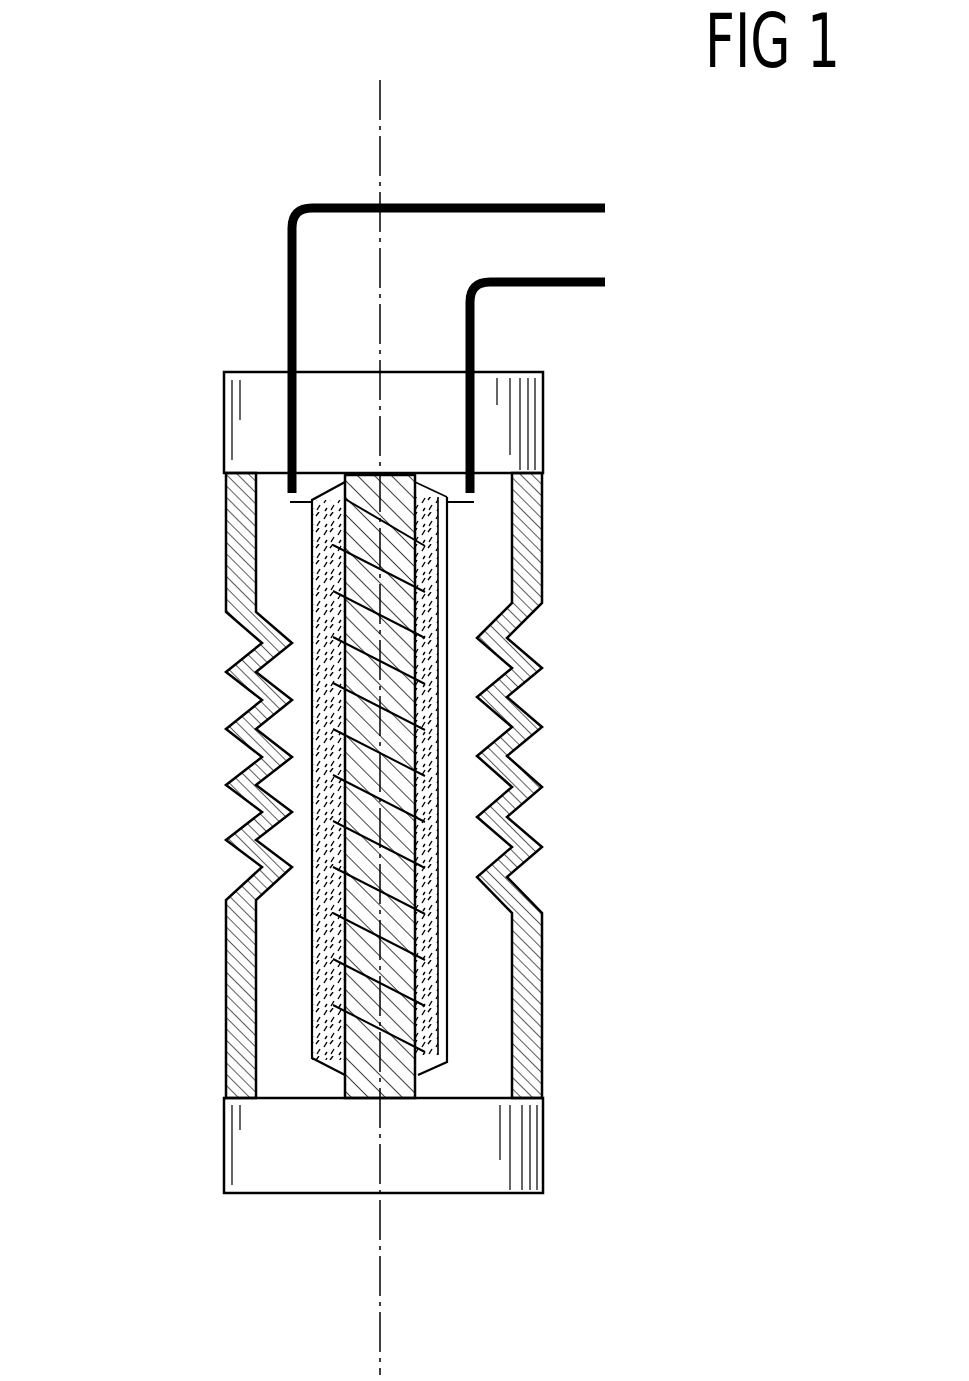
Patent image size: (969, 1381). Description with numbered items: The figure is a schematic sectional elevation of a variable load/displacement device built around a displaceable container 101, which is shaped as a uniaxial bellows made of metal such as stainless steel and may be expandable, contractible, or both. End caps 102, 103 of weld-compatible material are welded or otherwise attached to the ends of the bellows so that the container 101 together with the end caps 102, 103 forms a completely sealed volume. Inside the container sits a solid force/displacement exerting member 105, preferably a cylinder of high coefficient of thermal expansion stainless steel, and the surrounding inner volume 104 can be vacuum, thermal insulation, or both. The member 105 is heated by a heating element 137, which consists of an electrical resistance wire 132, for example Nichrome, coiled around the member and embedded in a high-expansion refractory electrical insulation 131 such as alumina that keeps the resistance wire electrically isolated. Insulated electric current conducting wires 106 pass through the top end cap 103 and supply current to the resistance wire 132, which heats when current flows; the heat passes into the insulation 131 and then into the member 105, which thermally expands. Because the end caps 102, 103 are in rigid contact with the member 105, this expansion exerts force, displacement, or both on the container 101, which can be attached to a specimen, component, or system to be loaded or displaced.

The displaceable container 101 is at (528, 538).
The end cap 102 is at (308, 1155).
The end cap 103 is at (328, 418).
The inner volume 104 is at (293, 778).
The force/displacement exerting member 105 is at (398, 838).
The insulated electric current conducting wires 106 is at (463, 328).
The electrical insulation 131 is at (430, 700).
The electrical resistance wire 132 is at (415, 768).
The heating element 137 is at (330, 950).